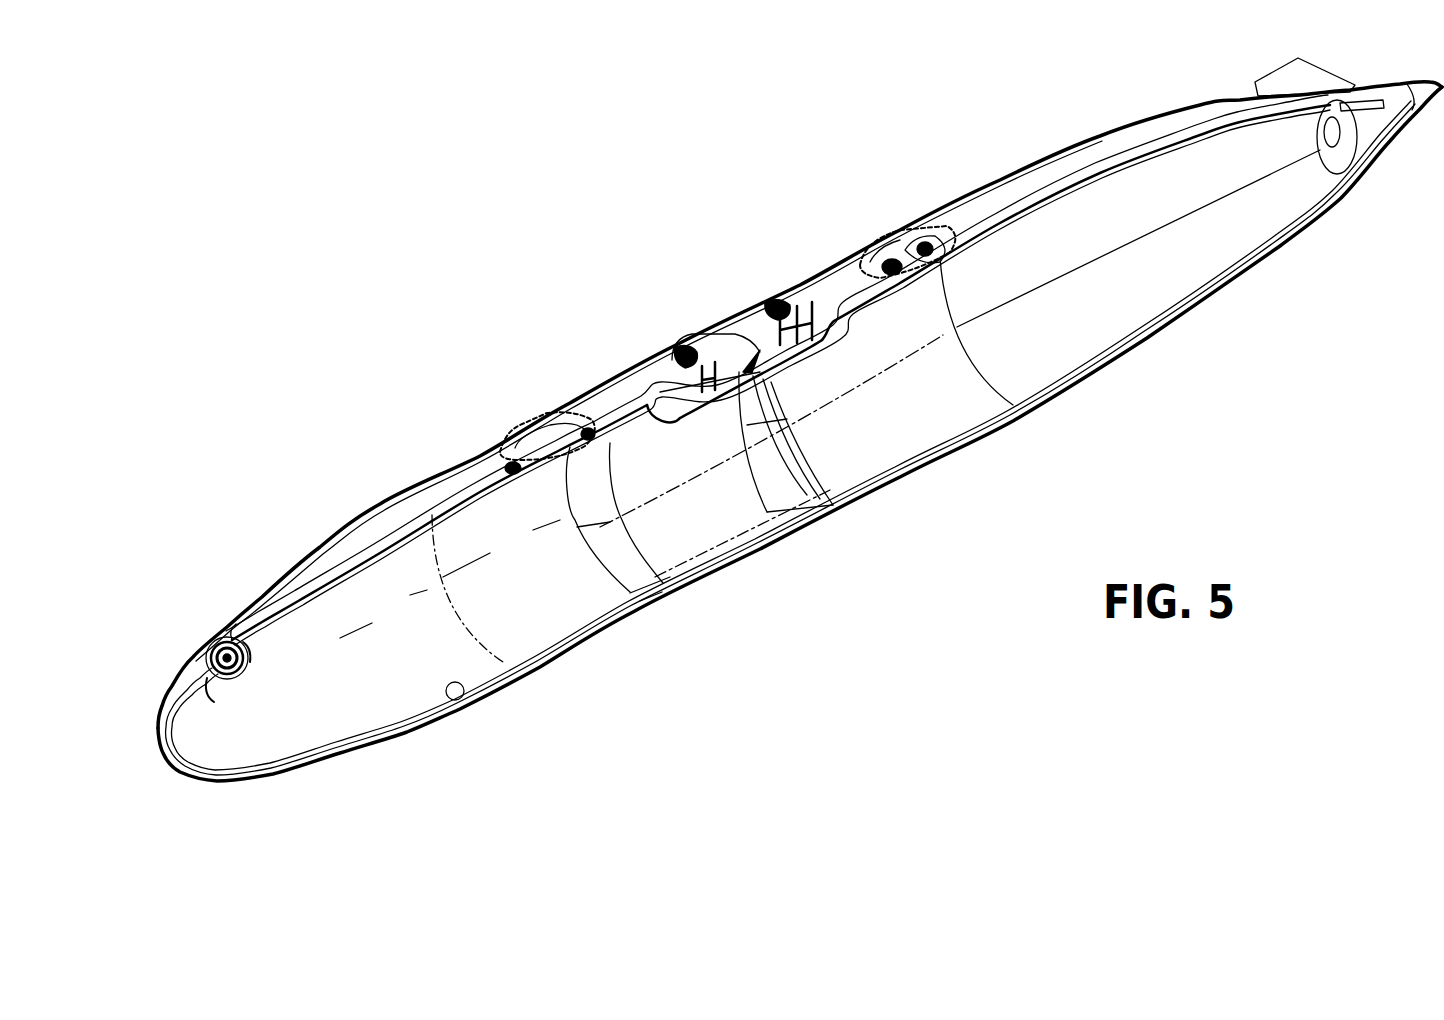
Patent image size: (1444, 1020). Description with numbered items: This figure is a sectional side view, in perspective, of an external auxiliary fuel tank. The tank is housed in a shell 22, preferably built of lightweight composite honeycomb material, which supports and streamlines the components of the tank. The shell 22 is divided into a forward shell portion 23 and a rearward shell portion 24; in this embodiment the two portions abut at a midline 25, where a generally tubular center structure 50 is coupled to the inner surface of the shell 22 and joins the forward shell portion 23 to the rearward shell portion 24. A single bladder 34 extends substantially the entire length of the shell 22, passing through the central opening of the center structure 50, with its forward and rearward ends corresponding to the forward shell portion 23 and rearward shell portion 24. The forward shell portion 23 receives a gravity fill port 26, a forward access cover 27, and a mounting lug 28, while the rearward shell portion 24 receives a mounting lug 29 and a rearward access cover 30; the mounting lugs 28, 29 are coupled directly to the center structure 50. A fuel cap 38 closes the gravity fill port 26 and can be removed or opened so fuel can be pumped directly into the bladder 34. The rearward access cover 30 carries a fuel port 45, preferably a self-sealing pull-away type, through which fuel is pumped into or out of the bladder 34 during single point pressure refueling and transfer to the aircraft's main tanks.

The shell 22 is at (547, 667).
The forward shell portion 23 is at (387, 516).
The rearward shell portion 24 is at (1100, 150).
The midline 25 is at (705, 330).
The gravity fill port 26 is at (236, 622).
The forward access cover 27 is at (553, 438).
The mounting lug 28 is at (680, 355).
The mounting lug 29 is at (776, 308).
The rearward access cover 30 is at (932, 248).
The bladder 34 is at (456, 701).
The fuel cap 38 is at (217, 645).
The fuel port 45 is at (896, 239).
The center structure 50 is at (772, 505).